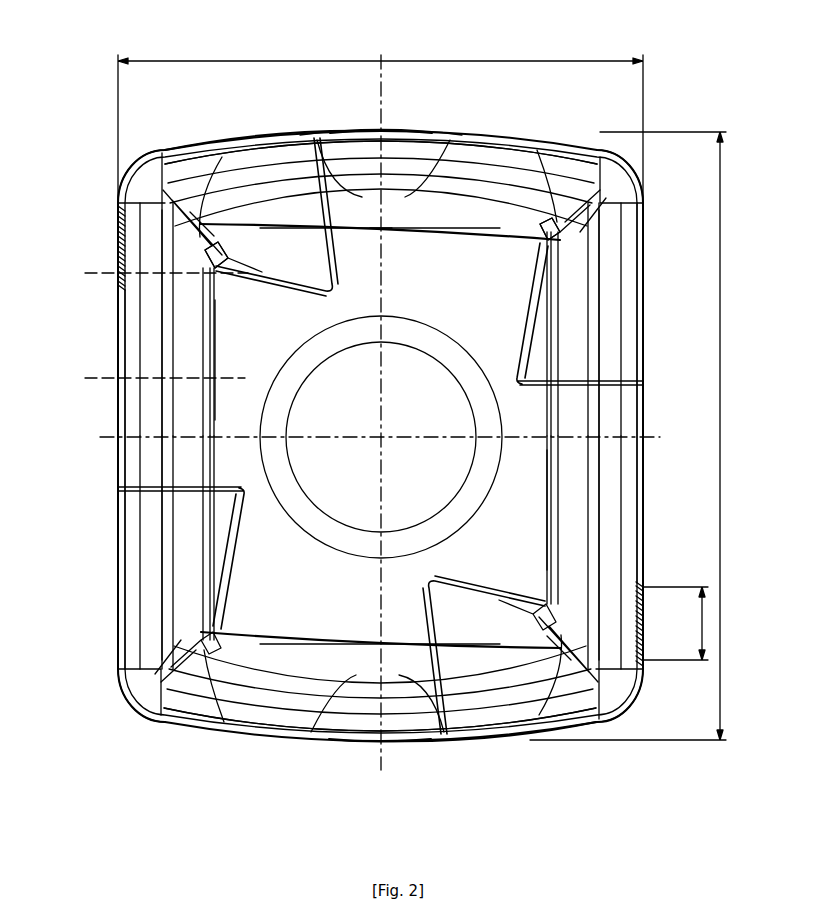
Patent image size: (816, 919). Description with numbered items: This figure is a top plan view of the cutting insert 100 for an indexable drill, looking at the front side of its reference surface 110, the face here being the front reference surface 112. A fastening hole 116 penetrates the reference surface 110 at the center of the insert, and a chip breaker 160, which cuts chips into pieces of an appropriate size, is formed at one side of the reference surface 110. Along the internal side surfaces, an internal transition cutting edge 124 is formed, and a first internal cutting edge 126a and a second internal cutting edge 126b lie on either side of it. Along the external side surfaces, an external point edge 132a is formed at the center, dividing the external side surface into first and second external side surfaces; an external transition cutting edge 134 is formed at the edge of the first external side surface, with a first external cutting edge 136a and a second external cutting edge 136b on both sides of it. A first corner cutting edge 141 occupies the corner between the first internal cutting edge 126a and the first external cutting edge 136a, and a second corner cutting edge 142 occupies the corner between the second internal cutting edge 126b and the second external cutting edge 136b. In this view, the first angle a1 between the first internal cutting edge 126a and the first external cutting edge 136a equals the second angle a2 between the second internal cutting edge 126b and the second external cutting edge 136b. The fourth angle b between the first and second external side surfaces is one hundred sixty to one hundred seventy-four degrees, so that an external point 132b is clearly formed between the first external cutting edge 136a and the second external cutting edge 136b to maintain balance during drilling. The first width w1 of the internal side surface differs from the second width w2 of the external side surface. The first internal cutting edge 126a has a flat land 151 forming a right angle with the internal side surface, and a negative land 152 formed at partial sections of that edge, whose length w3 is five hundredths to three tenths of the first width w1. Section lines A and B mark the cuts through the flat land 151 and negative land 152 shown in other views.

The cutting insert 100 is at (105, 21).
The reference surface 110 is at (270, 436).
The front reference surface 112 is at (272, 590).
The fastening hole 116 is at (432, 352).
The internal transition cutting edge 124 is at (228, 489).
The first internal cutting edge 126a is at (645, 558).
The second internal cutting edge 126b is at (120, 522).
The external point edge 132a is at (374, 442).
The external point 132b is at (379, 745).
The external transition cutting edge 134 is at (437, 744).
The first external cutting edge 136a is at (522, 742).
The second external cutting edge 136b is at (408, 750).
The first corner cutting edge 141 is at (626, 692).
The second corner cutting edge 142 is at (142, 688).
The flat land 151 is at (640, 527).
The negative land 152 is at (645, 624).
The chip breaker 160 is at (152, 606).
The first angle a1 is at (206, 245).
The second angle a2 is at (554, 229).
The fourth angle b is at (381, 209).
The section A is at (238, 386).
The section B is at (238, 281).
The first width w1 is at (629, 436).
The second width w2 is at (380, 120).
The length of negative land w3 is at (675, 623).